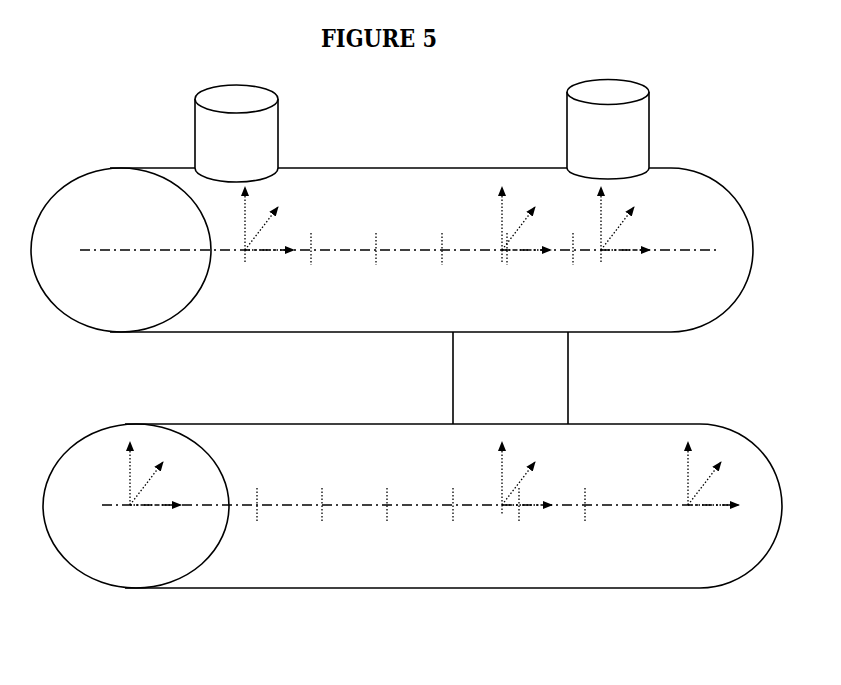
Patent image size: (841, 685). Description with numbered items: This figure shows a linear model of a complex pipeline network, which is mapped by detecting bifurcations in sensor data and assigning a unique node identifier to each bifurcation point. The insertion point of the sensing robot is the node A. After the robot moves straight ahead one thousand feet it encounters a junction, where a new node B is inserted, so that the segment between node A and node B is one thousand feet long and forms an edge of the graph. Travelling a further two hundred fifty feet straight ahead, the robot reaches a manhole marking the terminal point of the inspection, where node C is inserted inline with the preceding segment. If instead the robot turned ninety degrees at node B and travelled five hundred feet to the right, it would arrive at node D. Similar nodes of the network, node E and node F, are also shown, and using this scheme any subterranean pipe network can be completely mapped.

The node A is at (257, 246).
The node B is at (508, 246).
The node C is at (615, 246).
The node D is at (512, 503).
The node E is at (137, 494).
The node F is at (695, 503).